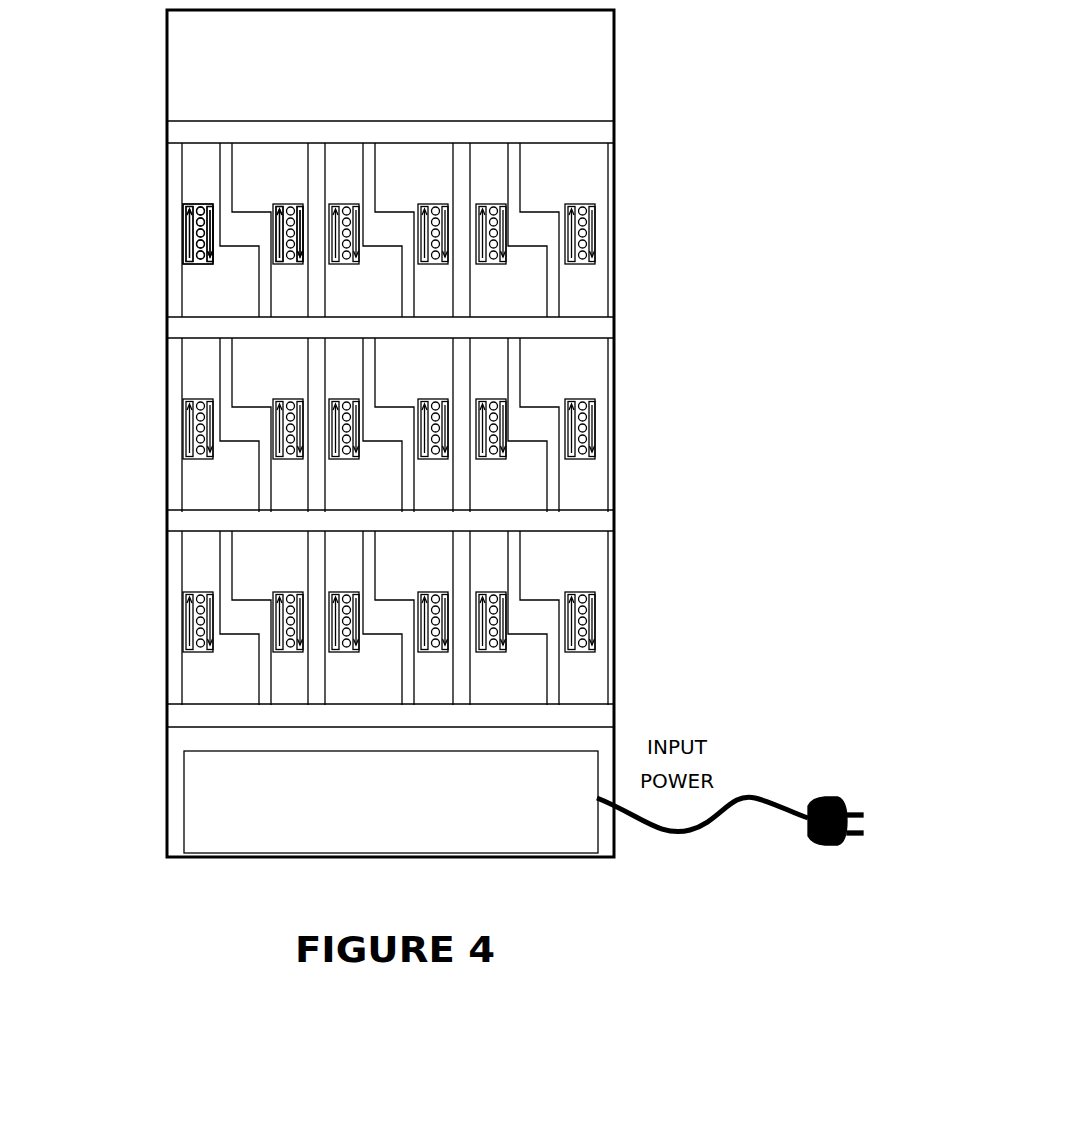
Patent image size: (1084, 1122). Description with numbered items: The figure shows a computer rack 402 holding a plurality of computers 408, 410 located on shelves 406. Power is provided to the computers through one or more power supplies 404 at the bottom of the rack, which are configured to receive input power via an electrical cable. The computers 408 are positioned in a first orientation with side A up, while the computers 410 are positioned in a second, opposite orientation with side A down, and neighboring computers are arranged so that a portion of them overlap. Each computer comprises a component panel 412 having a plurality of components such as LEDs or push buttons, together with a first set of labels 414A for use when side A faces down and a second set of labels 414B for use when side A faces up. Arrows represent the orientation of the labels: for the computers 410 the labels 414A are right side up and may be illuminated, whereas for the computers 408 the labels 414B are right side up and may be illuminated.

The computer rack 402 is at (371, 84).
The power supplies 404 is at (409, 822).
The shelves 406 is at (167, 710).
The computers 408 is at (283, 150).
The computers 410 is at (213, 309).
The component panel 412 is at (190, 205).
The first set of labels 414A is at (275, 265).
The second set of labels 414B is at (275, 206).